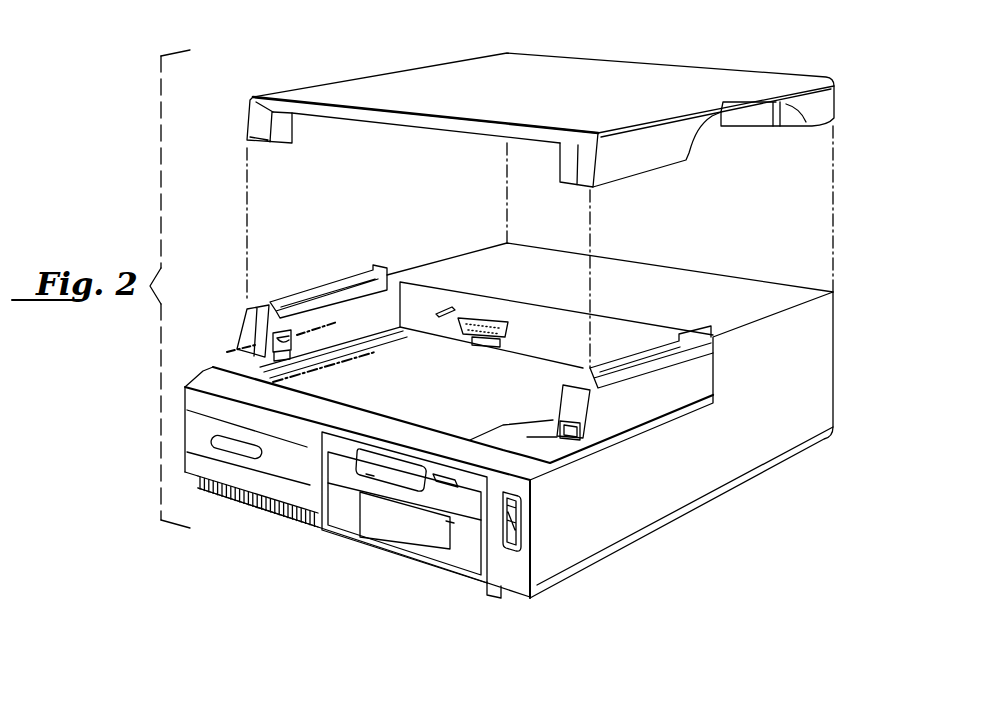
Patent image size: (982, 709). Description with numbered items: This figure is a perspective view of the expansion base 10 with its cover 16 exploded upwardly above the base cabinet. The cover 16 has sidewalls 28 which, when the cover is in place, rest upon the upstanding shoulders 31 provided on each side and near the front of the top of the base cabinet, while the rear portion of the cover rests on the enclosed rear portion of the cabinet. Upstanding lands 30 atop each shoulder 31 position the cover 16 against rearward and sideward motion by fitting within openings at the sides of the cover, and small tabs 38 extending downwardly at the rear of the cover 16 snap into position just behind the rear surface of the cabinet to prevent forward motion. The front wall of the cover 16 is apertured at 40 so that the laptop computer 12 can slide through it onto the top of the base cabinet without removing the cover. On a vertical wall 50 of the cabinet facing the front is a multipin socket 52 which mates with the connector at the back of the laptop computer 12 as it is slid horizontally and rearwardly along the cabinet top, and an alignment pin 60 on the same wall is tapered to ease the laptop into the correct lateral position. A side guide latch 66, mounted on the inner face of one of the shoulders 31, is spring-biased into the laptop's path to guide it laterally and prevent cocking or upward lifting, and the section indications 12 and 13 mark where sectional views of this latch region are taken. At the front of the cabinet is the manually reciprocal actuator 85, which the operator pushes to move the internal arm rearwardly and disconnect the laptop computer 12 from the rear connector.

The expansion base 10 is at (686, 264).
The laptop computer 12 is at (293, 377).
The section line 13 is at (232, 350).
The cover 16 is at (402, 63).
The sidewalls 28 is at (313, 119).
The upstanding lands 30 is at (351, 277).
The upstanding shoulders 31 is at (257, 327).
The small tabs 38 is at (753, 128).
The aperture in front wall of cover 40 is at (408, 132).
The vertical wall 50 is at (547, 335).
The multipin socket 52 is at (491, 319).
The alignment pin 60 is at (442, 304).
The side guide latch 66 is at (289, 331).
The manually reciprocal actuator 85 is at (566, 430).